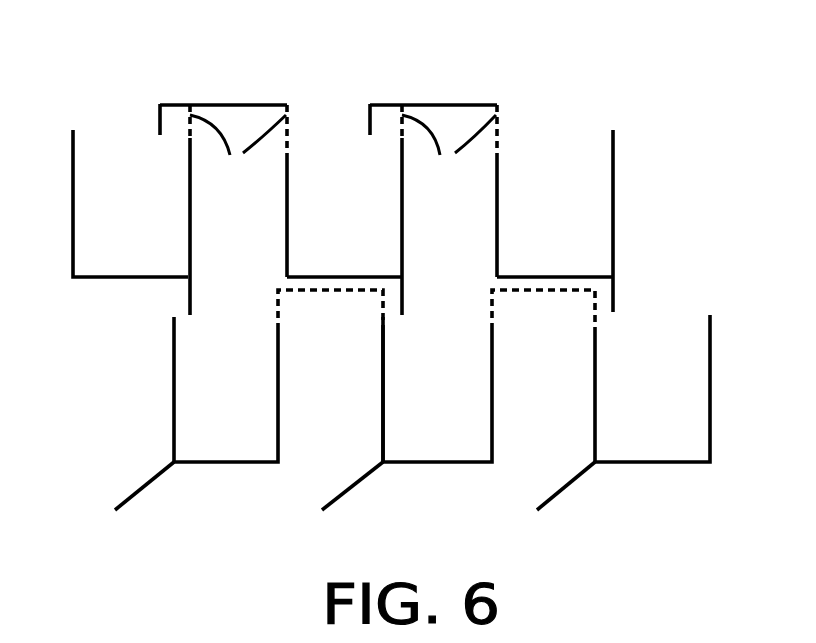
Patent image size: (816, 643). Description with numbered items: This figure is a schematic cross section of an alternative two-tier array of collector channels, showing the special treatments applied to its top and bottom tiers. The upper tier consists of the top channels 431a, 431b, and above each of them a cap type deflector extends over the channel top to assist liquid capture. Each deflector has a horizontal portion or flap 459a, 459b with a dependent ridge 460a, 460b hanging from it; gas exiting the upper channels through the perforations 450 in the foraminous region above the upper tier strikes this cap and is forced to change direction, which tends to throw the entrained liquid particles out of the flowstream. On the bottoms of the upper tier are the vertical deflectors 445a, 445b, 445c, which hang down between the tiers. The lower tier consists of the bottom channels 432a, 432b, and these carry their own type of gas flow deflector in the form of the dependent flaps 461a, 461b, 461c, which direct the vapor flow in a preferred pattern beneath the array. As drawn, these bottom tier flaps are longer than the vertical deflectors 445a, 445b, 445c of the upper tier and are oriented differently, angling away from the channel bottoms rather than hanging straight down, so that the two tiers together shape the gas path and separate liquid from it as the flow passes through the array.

The horizontal portion or flap 459a is at (212, 104).
The horizontal portion or flap 459b is at (433, 104).
The dependent ridge 460a is at (159, 124).
The dependent ridge 460b is at (369, 118).
The perforations 450 is at (343, 154).
The top channel 431a is at (287, 222).
The top channel 431b is at (497, 213).
The vertical deflector 445a is at (188, 290).
The vertical deflector 445b is at (403, 294).
The vertical deflector 445c is at (614, 296).
The bottom channel 432a is at (175, 408).
The bottom channel 432b is at (384, 408).
The dependent flap 461a is at (153, 480).
The dependent flap 461b is at (367, 477).
The dependent flap 461c is at (570, 483).